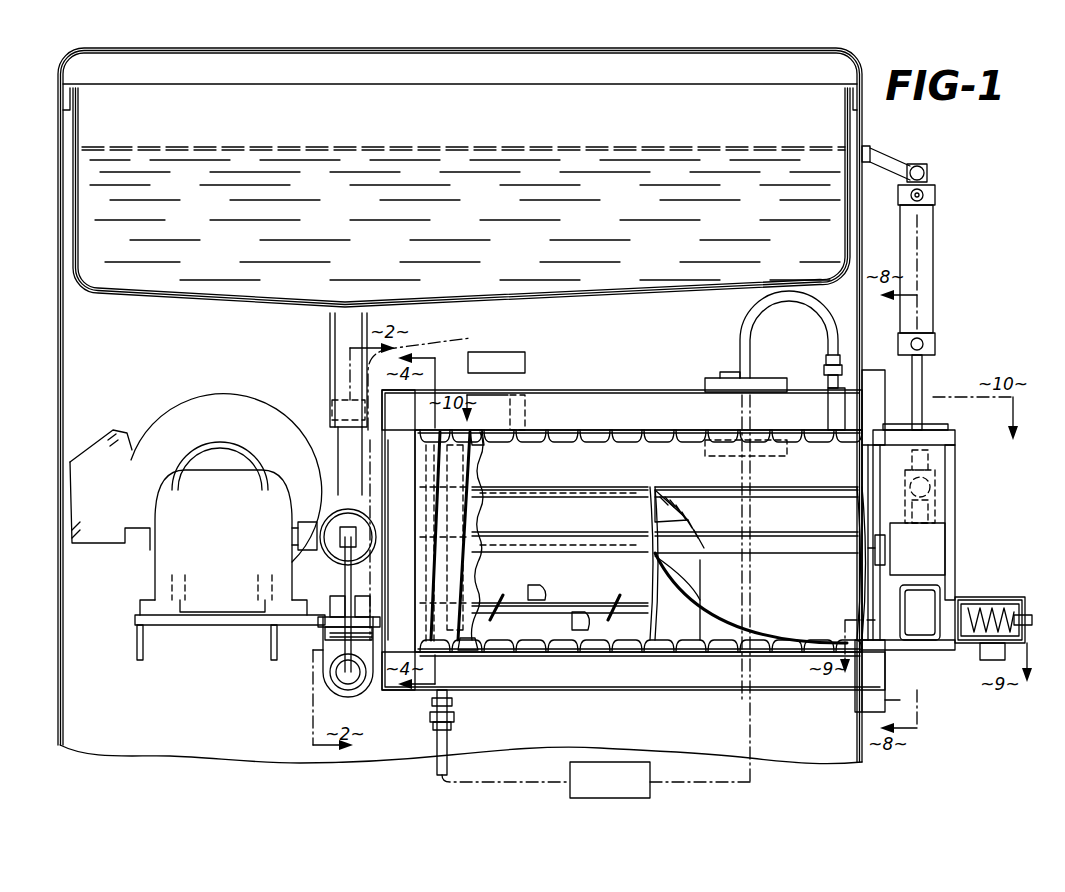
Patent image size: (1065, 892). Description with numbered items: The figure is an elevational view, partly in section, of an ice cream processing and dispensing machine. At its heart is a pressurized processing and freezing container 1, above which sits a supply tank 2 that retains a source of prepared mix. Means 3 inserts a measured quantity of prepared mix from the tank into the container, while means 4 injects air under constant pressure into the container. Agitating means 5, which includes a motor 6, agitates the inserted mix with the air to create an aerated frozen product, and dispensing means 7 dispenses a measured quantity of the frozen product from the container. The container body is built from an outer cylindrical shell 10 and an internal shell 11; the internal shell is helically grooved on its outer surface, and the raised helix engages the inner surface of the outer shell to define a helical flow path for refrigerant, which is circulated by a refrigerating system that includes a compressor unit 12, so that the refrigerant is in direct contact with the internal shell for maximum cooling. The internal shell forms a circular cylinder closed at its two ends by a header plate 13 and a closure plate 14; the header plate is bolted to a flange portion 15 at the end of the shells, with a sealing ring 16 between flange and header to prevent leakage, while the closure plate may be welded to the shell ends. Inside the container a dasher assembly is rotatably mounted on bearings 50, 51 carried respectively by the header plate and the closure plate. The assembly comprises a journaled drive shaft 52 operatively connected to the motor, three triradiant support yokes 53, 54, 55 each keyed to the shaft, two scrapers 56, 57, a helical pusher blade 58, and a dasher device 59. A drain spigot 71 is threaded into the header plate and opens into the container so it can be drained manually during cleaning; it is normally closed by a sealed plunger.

The processing and freezing container 1 is at (548, 675).
The supply tank 2 is at (58, 212).
The means for inserting prepared mix 3 is at (332, 559).
The means for injecting air 4 is at (512, 352).
The agitating means 5 is at (662, 555).
The motor 6 is at (160, 558).
The dispensing means 7 is at (955, 533).
The outer cylindrical shell 10 is at (647, 655).
The internal shell 11 is at (698, 645).
The compressor unit 12 is at (590, 744).
The header plate 13 is at (948, 488).
The closure plate 14 is at (395, 628).
The flange portion 15 is at (880, 708).
The sealing ring 16 is at (880, 648).
The bearing 50 is at (880, 562).
The bearing 51 is at (386, 565).
The drive shaft 52 is at (785, 540).
The triradiant support yoke 53 is at (455, 505).
The triradiant support yoke 54 is at (650, 520).
The triradiant support yoke 55 is at (858, 516).
The scraper 56 is at (590, 487).
The scraper 57 is at (718, 487).
The helical pusher blade 58 is at (790, 614).
The dasher device 59 is at (552, 603).
The drain spigot 71 is at (1004, 598).